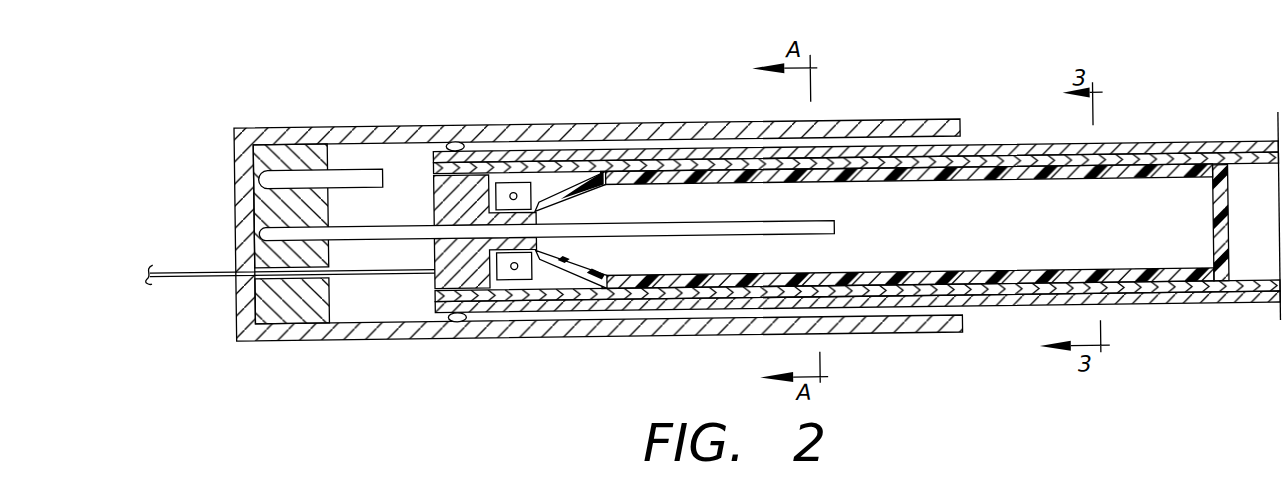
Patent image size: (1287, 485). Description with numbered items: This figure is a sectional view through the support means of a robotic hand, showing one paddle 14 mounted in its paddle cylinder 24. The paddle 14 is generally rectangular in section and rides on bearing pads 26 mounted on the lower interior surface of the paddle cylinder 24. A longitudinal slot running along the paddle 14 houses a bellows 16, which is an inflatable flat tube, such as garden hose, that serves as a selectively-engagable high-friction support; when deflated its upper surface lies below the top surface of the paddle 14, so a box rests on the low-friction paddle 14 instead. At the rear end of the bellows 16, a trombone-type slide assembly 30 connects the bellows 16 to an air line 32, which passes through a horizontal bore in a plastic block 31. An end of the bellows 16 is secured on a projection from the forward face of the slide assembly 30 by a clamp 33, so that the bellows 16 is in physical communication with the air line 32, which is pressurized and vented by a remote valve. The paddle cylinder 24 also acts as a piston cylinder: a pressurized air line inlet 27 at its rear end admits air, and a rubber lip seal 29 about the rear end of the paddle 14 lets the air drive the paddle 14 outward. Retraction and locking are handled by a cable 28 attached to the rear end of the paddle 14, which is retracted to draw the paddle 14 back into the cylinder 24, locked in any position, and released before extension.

The paddle 14 is at (1233, 154).
The bellows 16 is at (1138, 173).
The paddle cylinder 24 is at (647, 227).
The bearing pad 26 is at (841, 137).
The pressurized air line inlet 27 is at (297, 150).
The cable 28 is at (199, 272).
The rubber lip seal 29 is at (448, 146).
The slide assembly 30 is at (453, 144).
The plastic block 31 is at (292, 299).
The air line 32 is at (668, 154).
The clamp 33 is at (526, 186).